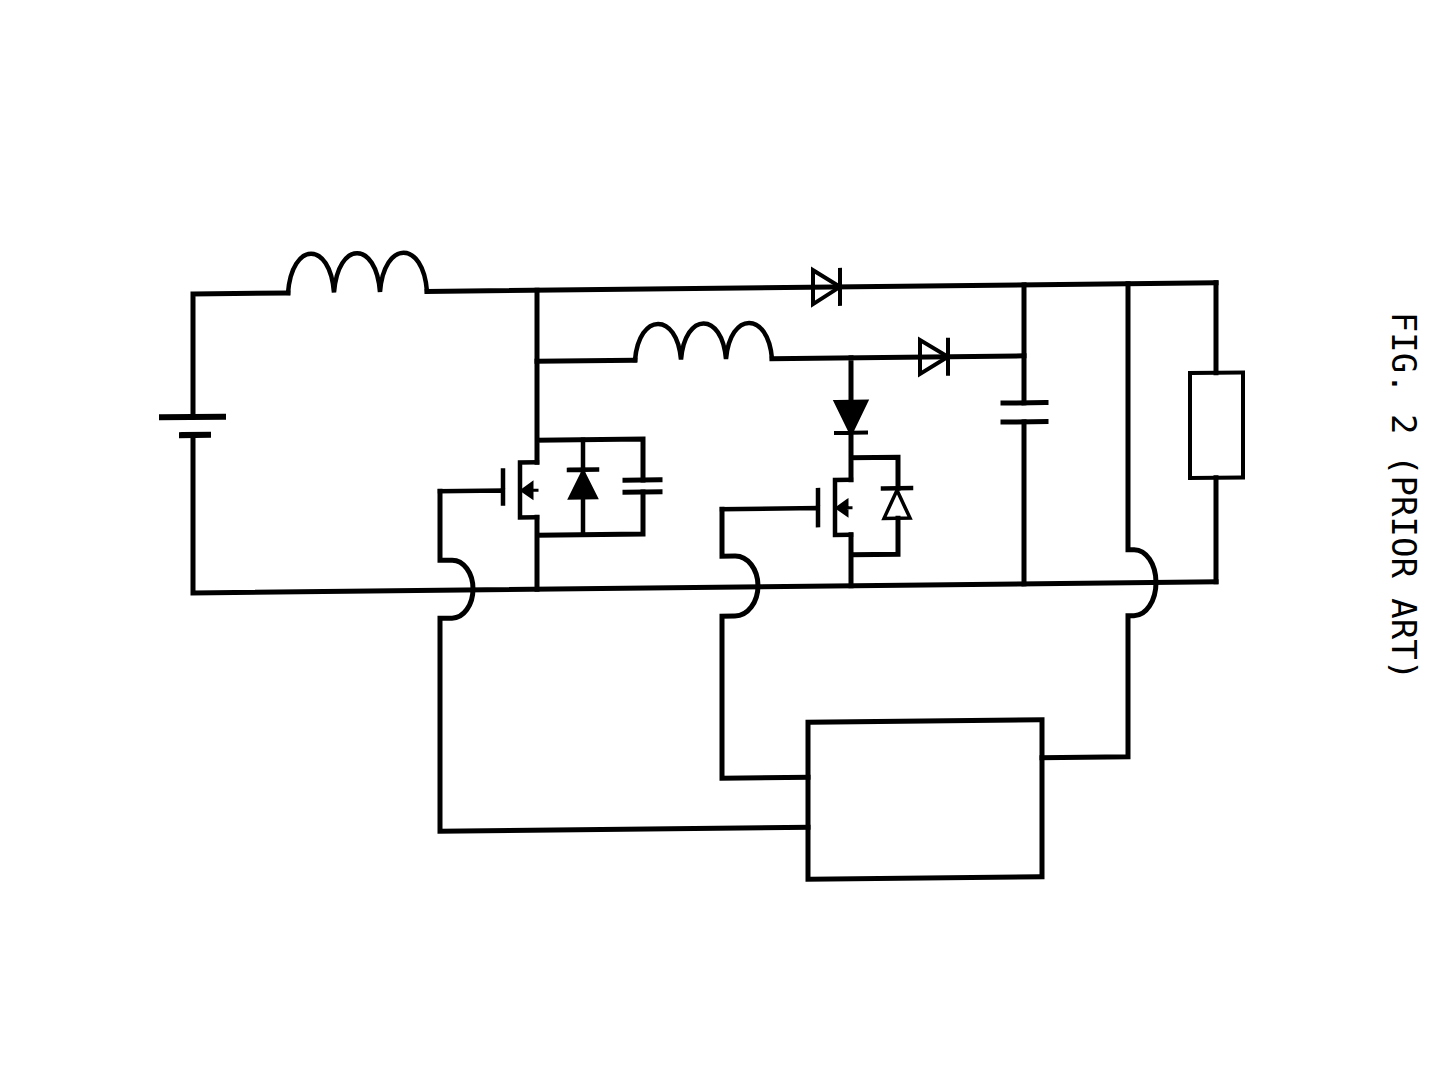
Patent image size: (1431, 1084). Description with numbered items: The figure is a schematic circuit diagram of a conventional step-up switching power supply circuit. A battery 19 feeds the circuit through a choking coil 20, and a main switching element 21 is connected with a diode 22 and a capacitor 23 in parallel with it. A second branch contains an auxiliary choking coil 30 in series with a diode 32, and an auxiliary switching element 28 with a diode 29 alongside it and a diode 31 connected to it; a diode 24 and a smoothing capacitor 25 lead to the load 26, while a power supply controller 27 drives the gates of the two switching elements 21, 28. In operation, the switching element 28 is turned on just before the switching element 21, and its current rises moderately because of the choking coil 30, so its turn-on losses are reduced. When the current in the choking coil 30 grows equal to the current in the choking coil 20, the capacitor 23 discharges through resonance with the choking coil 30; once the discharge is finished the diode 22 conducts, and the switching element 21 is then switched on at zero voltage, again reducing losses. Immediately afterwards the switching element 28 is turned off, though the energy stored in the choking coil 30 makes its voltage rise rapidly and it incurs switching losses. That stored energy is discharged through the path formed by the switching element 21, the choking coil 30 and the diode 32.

The battery 19 is at (178, 416).
The choking coil 20 is at (355, 247).
The switching element 21 is at (512, 465).
The diode 22 is at (568, 504).
The capacitor 23 is at (633, 509).
The diode 24 is at (833, 275).
The smoothing capacitor 25 is at (1037, 398).
The load 26 is at (1233, 374).
The power supply controller 27 is at (972, 721).
The switching element 28 is at (823, 489).
The diode 29 is at (887, 535).
The choking coil 30 is at (700, 316).
The diode 31 is at (877, 428).
The diode 32 is at (928, 344).